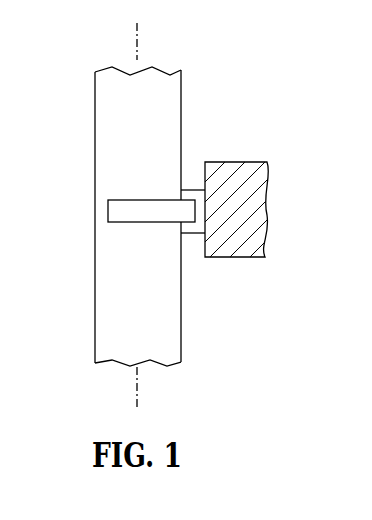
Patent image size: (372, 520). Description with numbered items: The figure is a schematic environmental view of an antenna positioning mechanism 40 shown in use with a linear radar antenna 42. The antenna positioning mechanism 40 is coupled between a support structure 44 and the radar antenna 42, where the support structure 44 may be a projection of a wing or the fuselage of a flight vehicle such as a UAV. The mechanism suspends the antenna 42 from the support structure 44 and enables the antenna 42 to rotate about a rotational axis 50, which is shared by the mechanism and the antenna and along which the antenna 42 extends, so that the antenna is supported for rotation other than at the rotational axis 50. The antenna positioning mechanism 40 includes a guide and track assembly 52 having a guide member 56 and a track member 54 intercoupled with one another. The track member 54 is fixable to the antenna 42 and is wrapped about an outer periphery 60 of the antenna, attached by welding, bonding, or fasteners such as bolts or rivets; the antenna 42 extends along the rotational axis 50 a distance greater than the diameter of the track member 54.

The antenna positioning mechanism 40 is at (193, 173).
The linear radar antenna 42 is at (181, 88).
The support structure 44 is at (240, 180).
The rotational axis 50 is at (137, 40).
The guide and track assembly 52 is at (192, 243).
The track member 54 is at (120, 212).
The guide member 56 is at (203, 208).
The outer periphery 60 is at (93, 287).